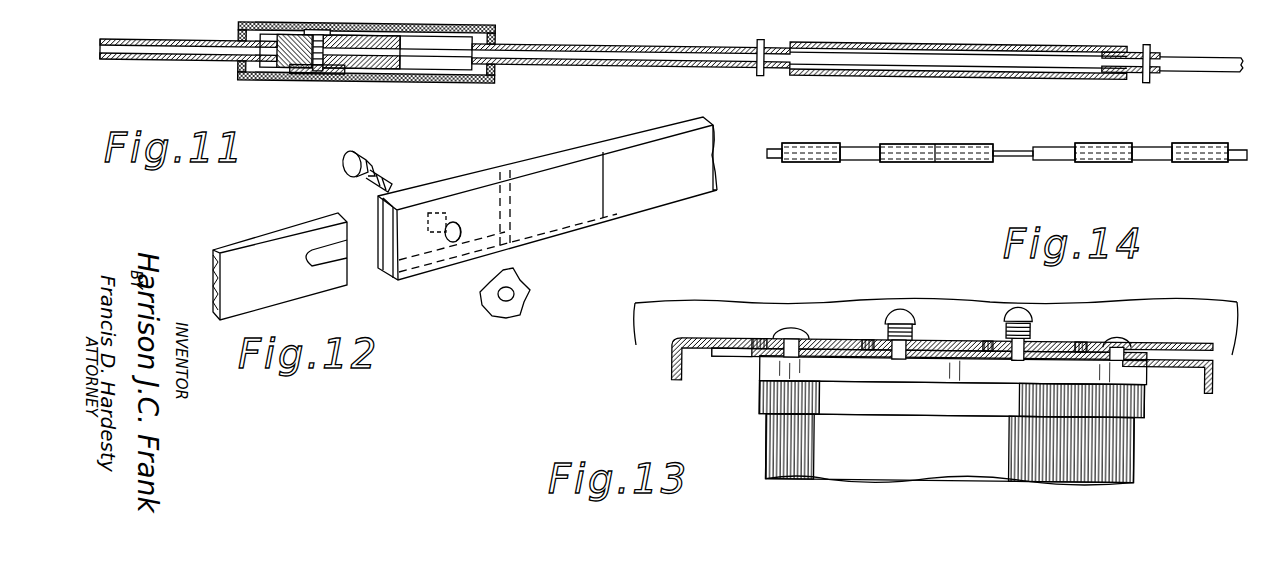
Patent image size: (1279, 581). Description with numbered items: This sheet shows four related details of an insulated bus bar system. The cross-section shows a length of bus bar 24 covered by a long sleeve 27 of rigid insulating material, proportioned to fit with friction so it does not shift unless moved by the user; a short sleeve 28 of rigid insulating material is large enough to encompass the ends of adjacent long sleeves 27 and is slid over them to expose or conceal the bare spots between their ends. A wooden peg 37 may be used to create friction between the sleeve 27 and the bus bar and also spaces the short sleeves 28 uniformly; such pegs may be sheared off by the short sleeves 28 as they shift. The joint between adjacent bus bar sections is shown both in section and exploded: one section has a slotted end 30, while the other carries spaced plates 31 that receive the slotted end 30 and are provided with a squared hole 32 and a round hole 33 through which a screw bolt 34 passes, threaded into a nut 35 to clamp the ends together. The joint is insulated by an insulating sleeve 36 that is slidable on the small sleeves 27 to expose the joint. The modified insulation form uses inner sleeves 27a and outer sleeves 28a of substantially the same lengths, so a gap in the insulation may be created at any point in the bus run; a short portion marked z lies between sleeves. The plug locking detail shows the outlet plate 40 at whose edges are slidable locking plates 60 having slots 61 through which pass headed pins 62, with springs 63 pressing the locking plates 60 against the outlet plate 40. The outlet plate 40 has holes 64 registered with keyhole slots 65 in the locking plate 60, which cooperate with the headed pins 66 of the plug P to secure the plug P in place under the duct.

In FIG. 11, the long sleeve 27 is at (167, 38).
In FIG. 11, the short sleeve 28 is at (972, 45).
In FIG. 11, the plates 31 is at (437, 62).
In FIG. 12, the plates 31 is at (568, 152).
In FIG. 11, the screw bolt 34 is at (325, 29).
In FIG. 12, the screw bolt 34 is at (374, 157).
In FIG. 11, the nut 35 is at (331, 73).
In FIG. 12, the nut 35 is at (525, 291).
In FIG. 11, the insulating sleeve 36 is at (470, 25).
In FIG. 11, the wooden peg 37 is at (762, 38).
In FIG. 12, the slotted end 30 is at (318, 266).
In FIG. 12, the squared hole 32 is at (440, 213).
In FIG. 12, the round hole 33 is at (463, 230).
In FIG. 14, the outer sleeve 28a is at (810, 145).
In FIG. 14, the inner sleeve 27a is at (858, 148).
In FIG. 14, the bus bar 24 is at (1022, 150).
In FIG. 14, the connecting rod z is at (1013, 145).
In FIG. 13, the outlet plate 40 is at (1177, 362).
In FIG. 13, the locking plate 60 is at (1170, 346).
In FIG. 13, the slot 61 is at (992, 343).
In FIG. 13, the headed pin 62 is at (1032, 318).
In FIG. 13, the spring 63 is at (1030, 333).
In FIG. 13, the hole 64 is at (1097, 360).
In FIG. 13, the keyhole slot 65 is at (1090, 345).
In FIG. 13, the headed pin 66 is at (1120, 341).
In FIG. 13, the plug P is at (1127, 453).